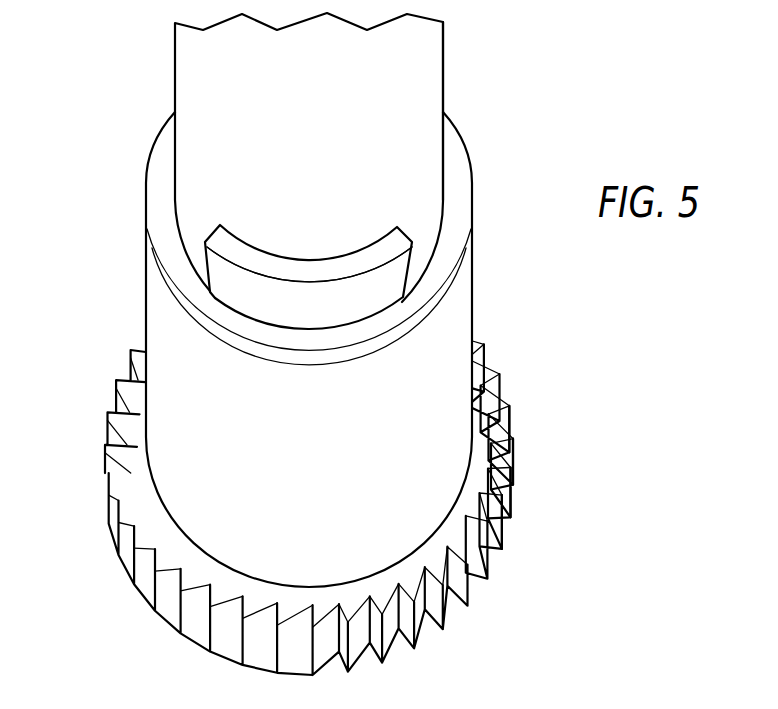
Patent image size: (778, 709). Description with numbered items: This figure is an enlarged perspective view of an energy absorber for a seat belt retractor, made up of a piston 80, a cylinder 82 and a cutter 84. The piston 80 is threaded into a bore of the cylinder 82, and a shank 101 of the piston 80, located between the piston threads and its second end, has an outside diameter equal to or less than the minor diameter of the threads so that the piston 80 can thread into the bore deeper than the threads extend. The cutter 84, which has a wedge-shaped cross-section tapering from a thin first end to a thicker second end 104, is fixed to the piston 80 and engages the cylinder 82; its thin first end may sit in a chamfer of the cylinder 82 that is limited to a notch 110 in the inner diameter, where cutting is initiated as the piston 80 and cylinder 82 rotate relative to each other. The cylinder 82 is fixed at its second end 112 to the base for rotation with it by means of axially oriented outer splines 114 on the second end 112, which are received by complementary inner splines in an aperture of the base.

The piston 80 is at (175, 63).
The shank 101 is at (443, 55).
The cutter 84 is at (250, 247).
The second end 104 is at (250, 267).
The notch 110 is at (413, 317).
The cylinder 82 is at (473, 323).
The second end 112 is at (105, 463).
The outer splines 114 is at (500, 535).